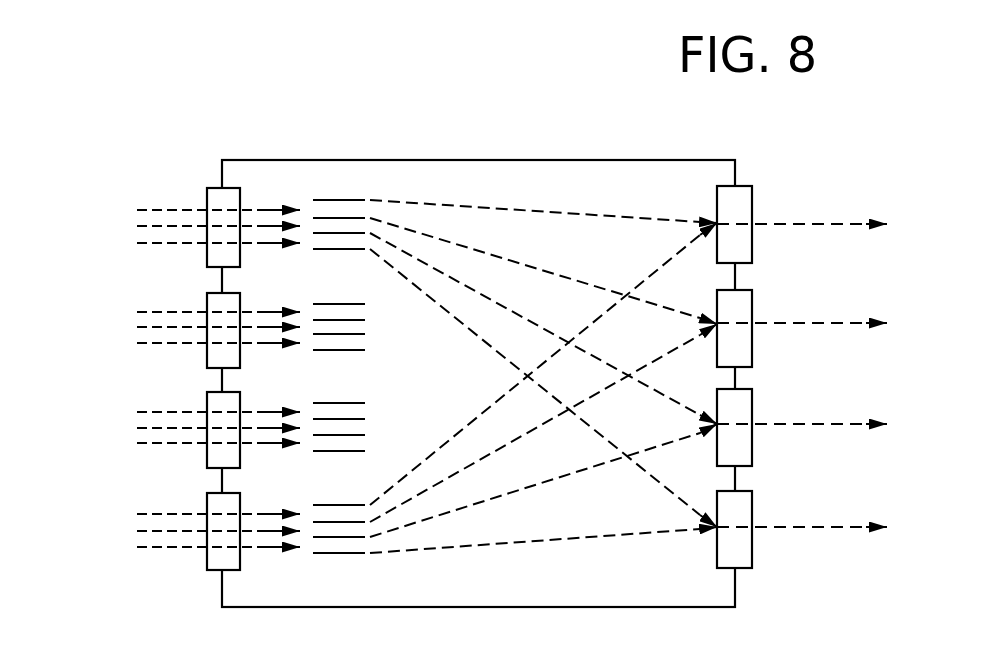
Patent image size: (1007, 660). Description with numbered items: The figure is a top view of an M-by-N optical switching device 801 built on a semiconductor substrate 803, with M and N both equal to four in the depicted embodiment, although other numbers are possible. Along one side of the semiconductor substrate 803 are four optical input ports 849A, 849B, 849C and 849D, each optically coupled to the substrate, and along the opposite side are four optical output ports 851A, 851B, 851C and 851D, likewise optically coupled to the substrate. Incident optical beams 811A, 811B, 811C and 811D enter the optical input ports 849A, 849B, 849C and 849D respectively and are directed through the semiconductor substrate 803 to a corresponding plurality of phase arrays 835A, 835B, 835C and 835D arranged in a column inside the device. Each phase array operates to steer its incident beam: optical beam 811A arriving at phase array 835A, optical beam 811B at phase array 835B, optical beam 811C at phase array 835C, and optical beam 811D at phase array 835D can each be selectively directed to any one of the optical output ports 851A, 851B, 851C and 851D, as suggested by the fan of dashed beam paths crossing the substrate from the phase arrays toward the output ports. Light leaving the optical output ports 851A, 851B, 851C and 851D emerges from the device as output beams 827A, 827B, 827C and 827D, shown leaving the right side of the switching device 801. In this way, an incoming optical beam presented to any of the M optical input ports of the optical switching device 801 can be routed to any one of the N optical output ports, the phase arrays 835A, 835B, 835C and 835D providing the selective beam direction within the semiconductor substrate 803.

The optical switching device 801 is at (387, 142).
The semiconductor substrate 803 is at (560, 158).
The optical beam 811A is at (125, 198).
The optical beam 811B is at (125, 300).
The optical beam 811C is at (125, 400).
The optical beam 811D is at (125, 503).
The optical input port 849A is at (207, 196).
The optical input port 849B is at (207, 299).
The optical input port 849C is at (207, 399).
The optical input port 849D is at (207, 501).
The phase array 835A is at (362, 197).
The phase array 835B is at (368, 328).
The phase array 835C is at (368, 432).
The phase array 835D is at (350, 554).
The optical output port 851A is at (752, 195).
The optical output port 851B is at (752, 315).
The optical output port 851C is at (752, 411).
The optical output port 851D is at (752, 513).
The output optical signal 827A is at (818, 224).
The output optical signal 827B is at (818, 323).
The output optical signal 827C is at (818, 424).
The output optical signal 827D is at (818, 527).